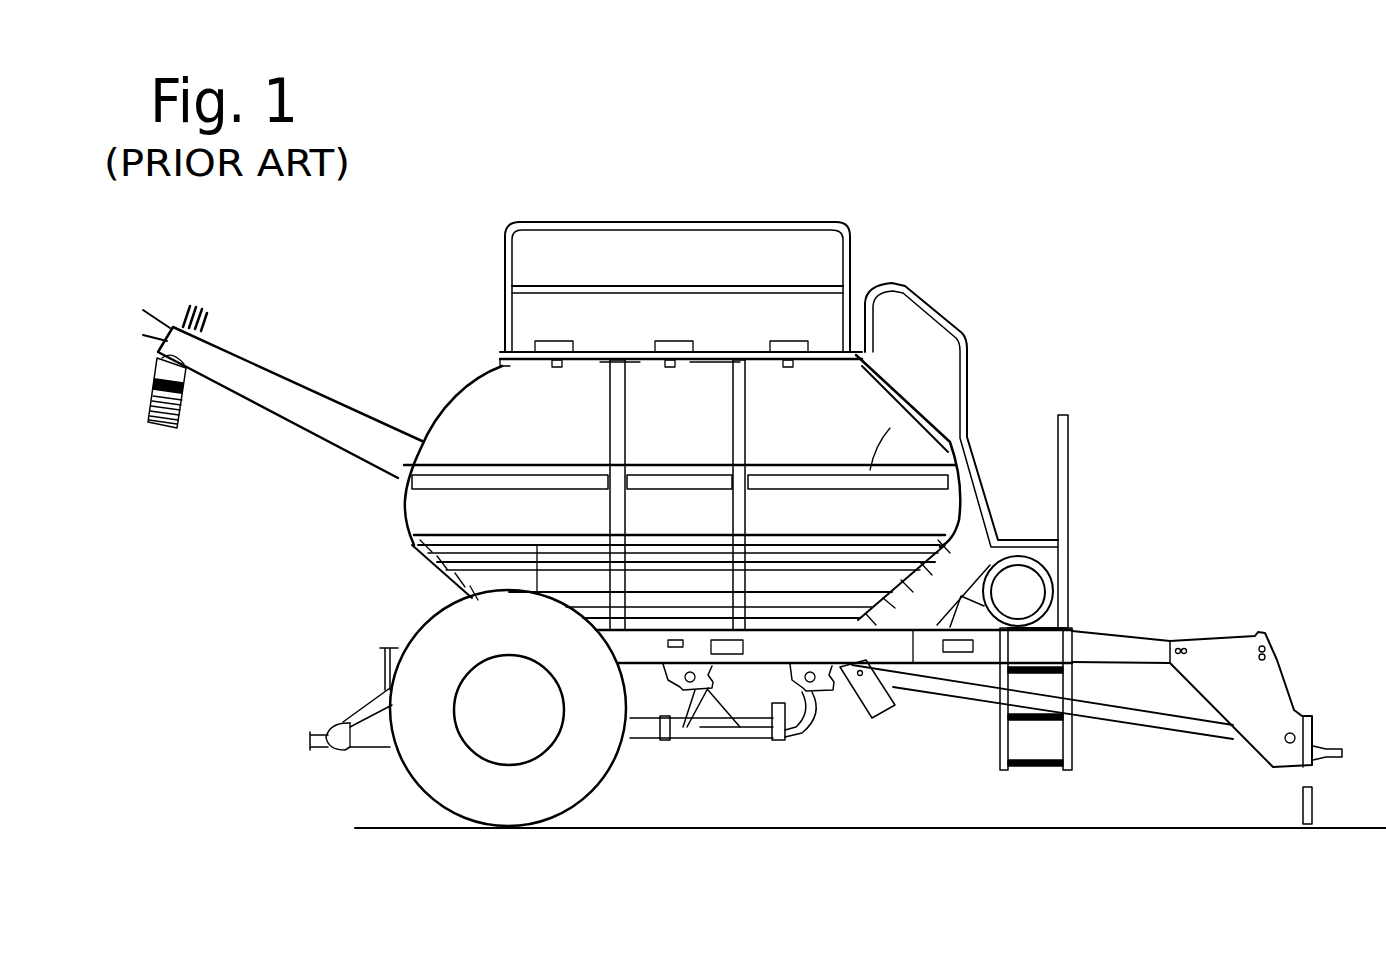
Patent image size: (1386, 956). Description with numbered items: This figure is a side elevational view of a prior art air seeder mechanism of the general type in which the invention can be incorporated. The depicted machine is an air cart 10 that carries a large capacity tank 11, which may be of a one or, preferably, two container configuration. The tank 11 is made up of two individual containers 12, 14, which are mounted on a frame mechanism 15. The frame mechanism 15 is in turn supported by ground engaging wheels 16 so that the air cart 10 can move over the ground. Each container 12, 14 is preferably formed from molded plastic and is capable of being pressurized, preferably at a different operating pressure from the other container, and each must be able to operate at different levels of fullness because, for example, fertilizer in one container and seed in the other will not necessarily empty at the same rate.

The air cart 10 is at (922, 268).
The tank 11 is at (393, 514).
The container 12 is at (483, 407).
The container 14 is at (884, 428).
The frame mechanism 15 is at (747, 740).
The ground engaging wheels 16 is at (405, 768).